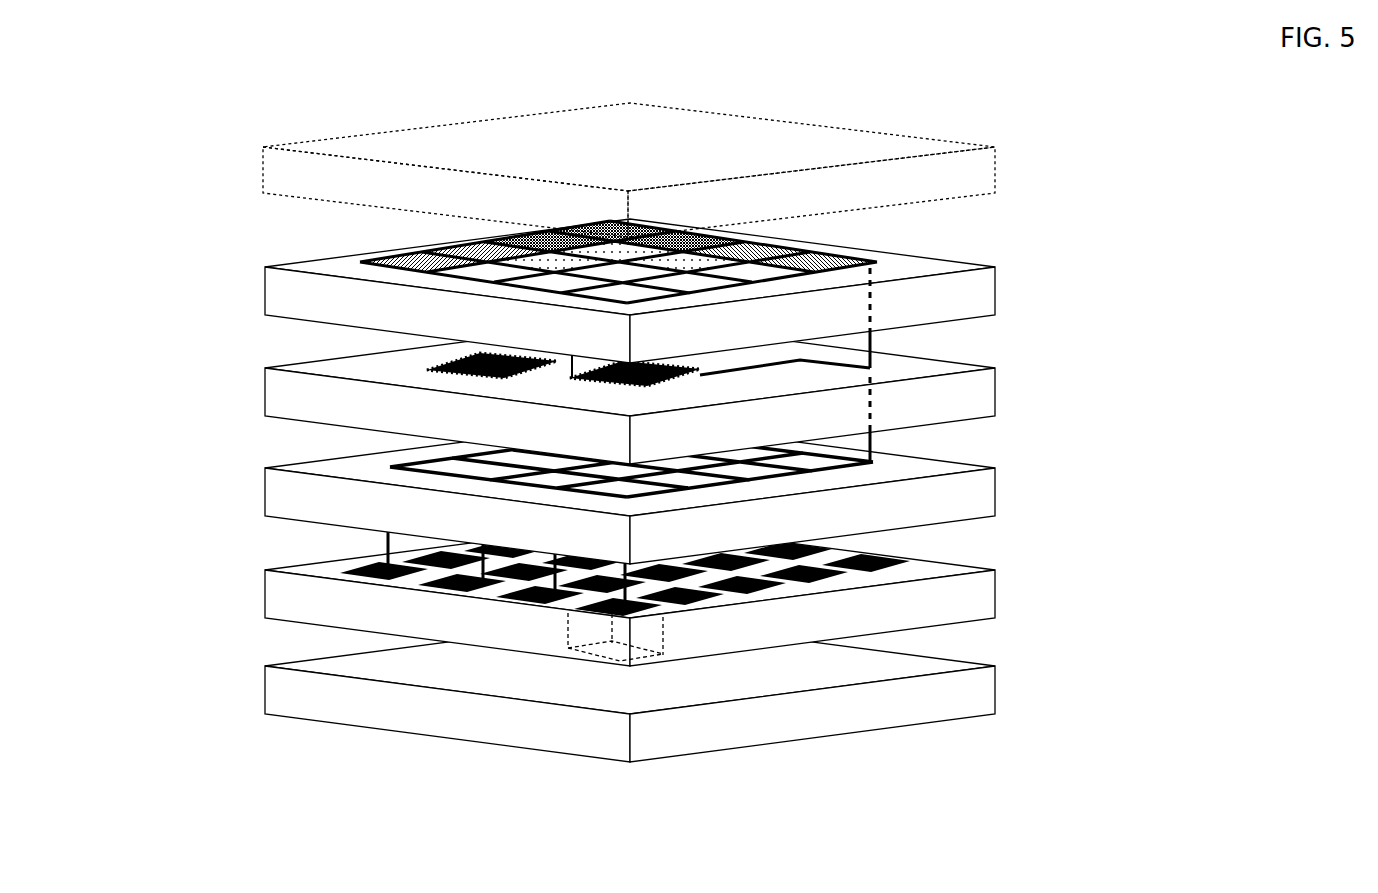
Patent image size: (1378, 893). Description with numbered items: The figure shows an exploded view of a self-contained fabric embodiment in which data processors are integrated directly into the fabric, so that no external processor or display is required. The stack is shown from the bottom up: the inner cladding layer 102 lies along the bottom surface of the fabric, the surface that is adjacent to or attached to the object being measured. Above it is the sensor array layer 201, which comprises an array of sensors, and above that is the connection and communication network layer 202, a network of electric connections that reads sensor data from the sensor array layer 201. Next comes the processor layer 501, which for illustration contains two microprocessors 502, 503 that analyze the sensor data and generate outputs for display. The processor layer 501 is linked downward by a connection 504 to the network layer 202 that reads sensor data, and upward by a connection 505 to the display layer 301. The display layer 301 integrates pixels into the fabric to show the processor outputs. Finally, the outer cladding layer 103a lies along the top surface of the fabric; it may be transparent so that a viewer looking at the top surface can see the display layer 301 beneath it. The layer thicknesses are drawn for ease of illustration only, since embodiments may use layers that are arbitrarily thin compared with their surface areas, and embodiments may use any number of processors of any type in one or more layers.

The outer cladding layer 103a is at (287, 168).
The display layer 301 is at (288, 292).
The microprocessor 503 is at (440, 363).
The connection to display layers 505 is at (870, 342).
The processor layer 501 is at (978, 398).
The microprocessor 502 is at (870, 368).
The connection and communication network layer 202 is at (278, 495).
The connection to layer 202 504 is at (870, 436).
The sensor array layer 201 is at (287, 597).
The inner cladding layer 102 is at (305, 693).